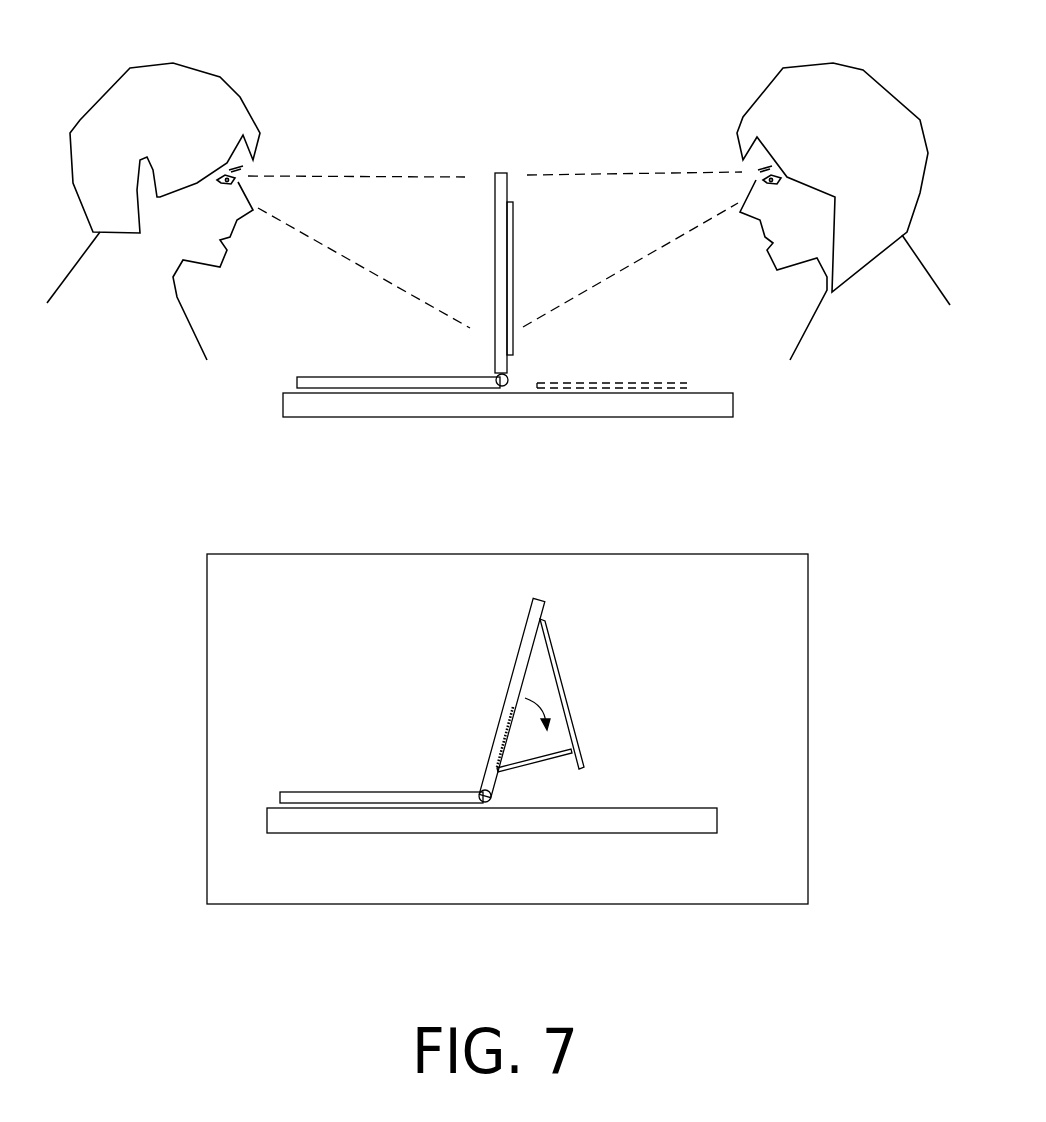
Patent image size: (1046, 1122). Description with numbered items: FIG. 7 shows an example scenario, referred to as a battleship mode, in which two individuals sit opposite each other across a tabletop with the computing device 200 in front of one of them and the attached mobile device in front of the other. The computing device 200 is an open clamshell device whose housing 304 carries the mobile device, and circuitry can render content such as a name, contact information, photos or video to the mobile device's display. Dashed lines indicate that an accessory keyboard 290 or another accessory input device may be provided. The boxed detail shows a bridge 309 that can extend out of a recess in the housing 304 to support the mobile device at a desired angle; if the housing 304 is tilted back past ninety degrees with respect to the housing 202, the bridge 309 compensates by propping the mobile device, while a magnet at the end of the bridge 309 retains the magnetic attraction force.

The computing device 200 is at (398, 142).
The accessory keyboard 290 is at (605, 382).
The housing 202 is at (387, 793).
The housing 304 is at (527, 628).
The bridge 309 is at (527, 765).